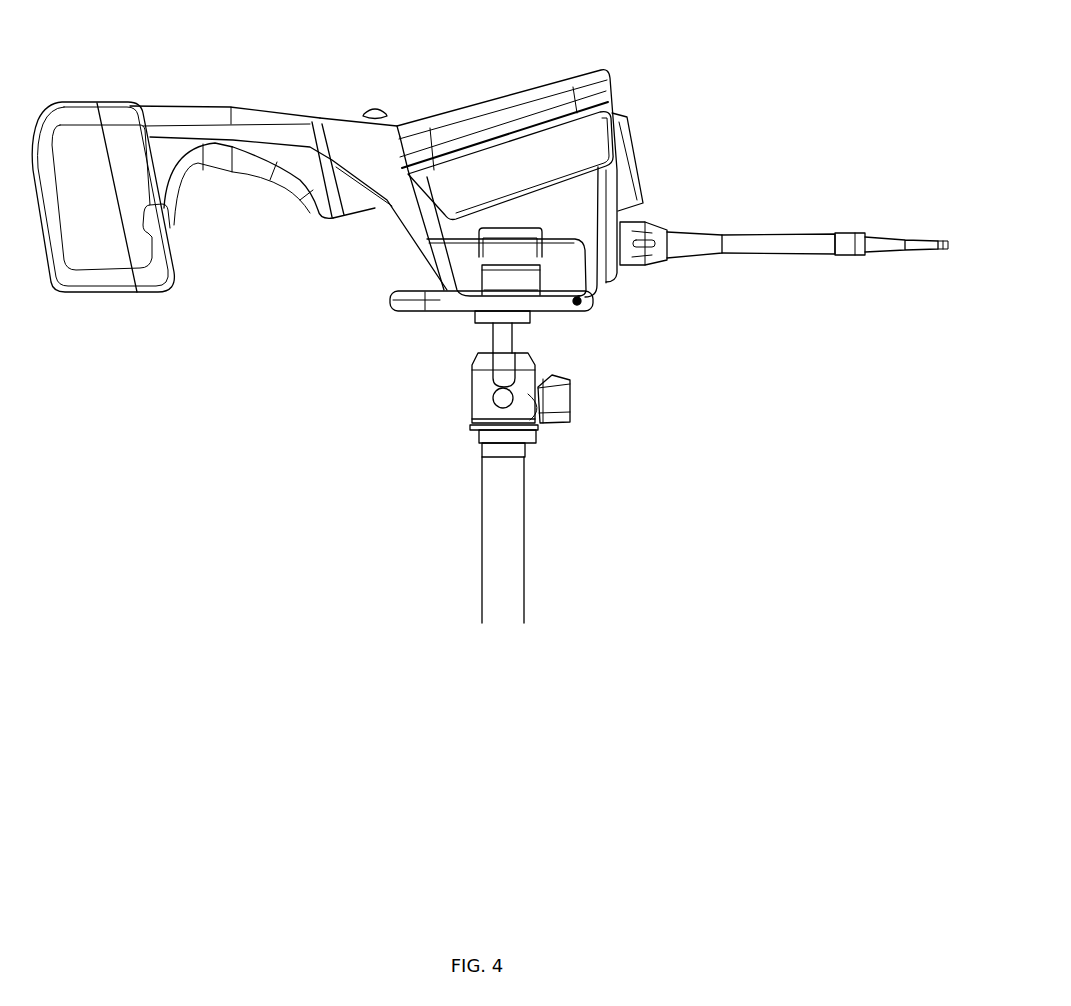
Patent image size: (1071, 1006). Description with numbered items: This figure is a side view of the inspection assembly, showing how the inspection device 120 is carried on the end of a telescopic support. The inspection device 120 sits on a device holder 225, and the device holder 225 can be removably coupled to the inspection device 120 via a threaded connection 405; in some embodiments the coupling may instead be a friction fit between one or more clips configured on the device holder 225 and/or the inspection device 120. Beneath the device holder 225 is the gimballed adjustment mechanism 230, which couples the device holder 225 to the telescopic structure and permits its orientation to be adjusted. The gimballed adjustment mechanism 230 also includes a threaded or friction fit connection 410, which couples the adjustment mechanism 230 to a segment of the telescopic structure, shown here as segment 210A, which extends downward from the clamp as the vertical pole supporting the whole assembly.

The inspection device 120 is at (590, 79).
The device holder 225 is at (419, 306).
The threaded connection 405 is at (521, 319).
The gimballed adjustment mechanism 230 is at (590, 397).
The threaded or friction fit connection 410 is at (476, 440).
The segment 210A is at (517, 545).